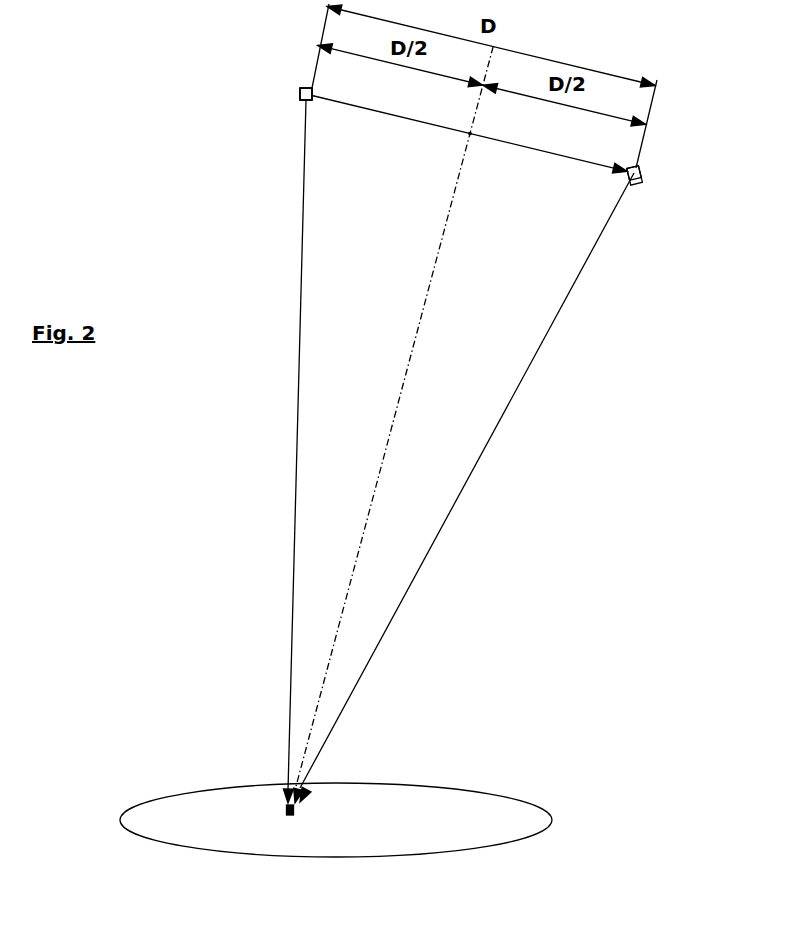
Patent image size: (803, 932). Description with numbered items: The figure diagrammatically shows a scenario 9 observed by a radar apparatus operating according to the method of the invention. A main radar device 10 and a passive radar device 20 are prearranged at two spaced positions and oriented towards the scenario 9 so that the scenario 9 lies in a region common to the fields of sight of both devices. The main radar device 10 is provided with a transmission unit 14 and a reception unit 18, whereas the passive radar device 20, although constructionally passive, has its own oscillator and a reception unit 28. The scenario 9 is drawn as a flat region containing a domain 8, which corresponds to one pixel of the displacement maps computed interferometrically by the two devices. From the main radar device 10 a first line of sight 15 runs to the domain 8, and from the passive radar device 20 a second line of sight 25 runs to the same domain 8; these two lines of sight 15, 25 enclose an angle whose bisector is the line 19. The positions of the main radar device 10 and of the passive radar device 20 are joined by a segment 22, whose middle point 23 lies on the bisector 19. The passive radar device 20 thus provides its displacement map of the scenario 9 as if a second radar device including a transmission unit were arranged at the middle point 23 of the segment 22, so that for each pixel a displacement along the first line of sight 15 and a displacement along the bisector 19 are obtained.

The domain 8 is at (285, 822).
The scenario 9 is at (486, 807).
The main radar device 10 is at (262, 85).
The transmission unit 14 is at (300, 88).
The reception unit 18 is at (306, 94).
The first line of sight 15 is at (303, 170).
The bisector 19 is at (418, 325).
The passive radar device 20 is at (652, 163).
The segment 22 is at (535, 149).
The middle point 23 is at (463, 133).
The second line of sight 25 is at (597, 250).
The reception unit 28 is at (640, 180).